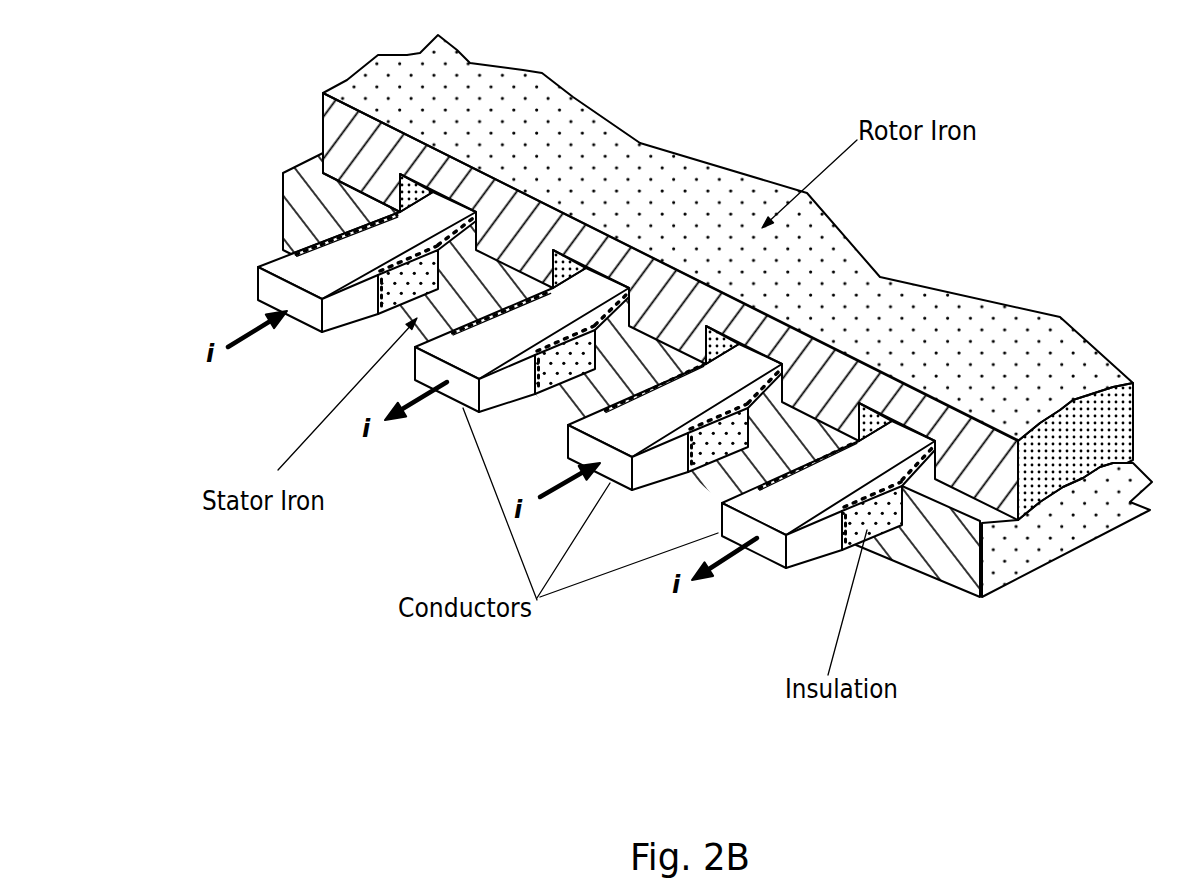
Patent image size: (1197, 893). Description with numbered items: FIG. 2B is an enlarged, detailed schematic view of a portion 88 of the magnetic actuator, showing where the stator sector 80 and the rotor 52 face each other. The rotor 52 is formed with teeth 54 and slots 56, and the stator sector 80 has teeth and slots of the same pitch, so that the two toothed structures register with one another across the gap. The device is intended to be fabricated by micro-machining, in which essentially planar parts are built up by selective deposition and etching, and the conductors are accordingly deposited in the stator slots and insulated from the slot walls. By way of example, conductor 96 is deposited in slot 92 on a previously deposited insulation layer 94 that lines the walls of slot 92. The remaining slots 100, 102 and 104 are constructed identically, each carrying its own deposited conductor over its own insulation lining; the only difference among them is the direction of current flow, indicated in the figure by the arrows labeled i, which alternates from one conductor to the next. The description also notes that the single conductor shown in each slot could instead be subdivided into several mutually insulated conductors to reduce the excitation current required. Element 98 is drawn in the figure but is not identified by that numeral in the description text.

The rotor 52 is at (990, 323).
The teeth 54 is at (973, 457).
The slots 56 is at (767, 327).
The stator sector 80 is at (1003, 562).
The portion 88 is at (622, 92).
The slot 92 is at (880, 534).
The insulation layer 94 is at (842, 533).
The conductor 96 is at (770, 550).
The stator tooth 98 is at (733, 487).
The slot 100 is at (720, 473).
The slot 102 is at (538, 388).
The slot 104 is at (374, 318).